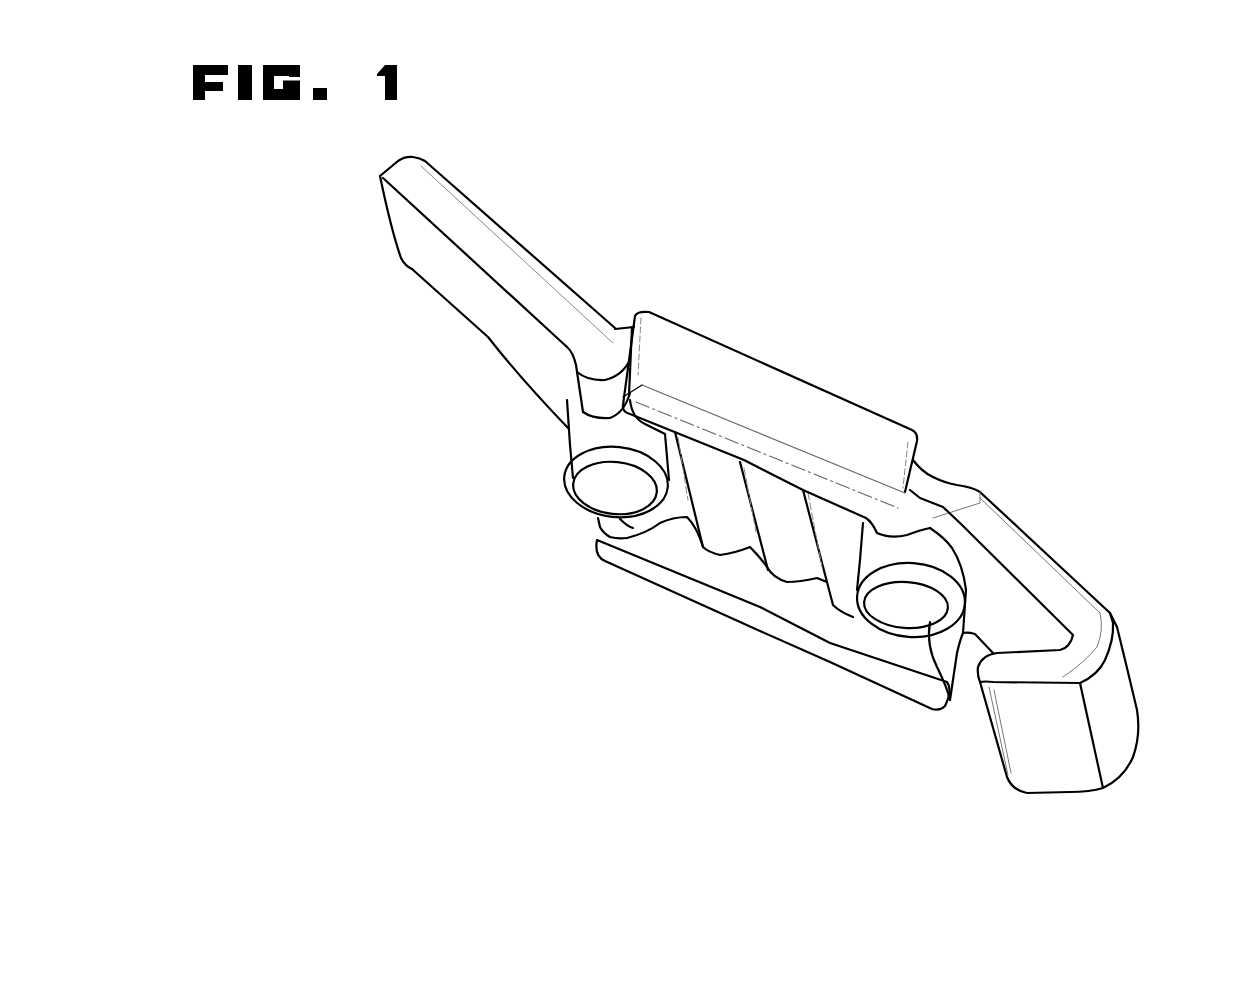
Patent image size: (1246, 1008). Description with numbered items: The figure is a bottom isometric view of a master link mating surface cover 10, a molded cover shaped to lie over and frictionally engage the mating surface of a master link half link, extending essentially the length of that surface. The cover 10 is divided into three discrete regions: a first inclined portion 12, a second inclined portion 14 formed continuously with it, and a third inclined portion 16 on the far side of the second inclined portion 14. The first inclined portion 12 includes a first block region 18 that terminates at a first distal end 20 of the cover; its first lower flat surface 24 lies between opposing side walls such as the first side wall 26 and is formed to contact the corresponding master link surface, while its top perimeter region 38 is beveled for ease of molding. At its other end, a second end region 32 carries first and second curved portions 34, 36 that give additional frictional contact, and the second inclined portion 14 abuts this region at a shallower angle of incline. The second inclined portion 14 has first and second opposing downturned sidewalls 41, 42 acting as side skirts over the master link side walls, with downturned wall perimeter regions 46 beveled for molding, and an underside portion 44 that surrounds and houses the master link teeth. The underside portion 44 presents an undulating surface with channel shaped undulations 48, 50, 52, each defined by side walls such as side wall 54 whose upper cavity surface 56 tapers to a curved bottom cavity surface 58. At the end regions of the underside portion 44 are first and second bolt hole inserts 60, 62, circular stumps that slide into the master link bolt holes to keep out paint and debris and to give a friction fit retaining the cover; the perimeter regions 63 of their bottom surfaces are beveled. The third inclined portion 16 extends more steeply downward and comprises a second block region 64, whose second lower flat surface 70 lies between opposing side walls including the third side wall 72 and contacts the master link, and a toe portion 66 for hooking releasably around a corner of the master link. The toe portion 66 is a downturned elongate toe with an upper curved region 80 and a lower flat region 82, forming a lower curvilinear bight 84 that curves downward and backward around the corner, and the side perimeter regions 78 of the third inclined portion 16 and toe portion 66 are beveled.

The master link mating surface cover 10 is at (958, 228).
The first inclined portion 12 is at (649, 301).
The second inclined portion 14 is at (933, 398).
The third inclined portion 16 is at (1186, 589).
The first block region 18 is at (380, 230).
The first distal end 20 is at (386, 203).
The first lower flat surface 24 is at (422, 256).
The first side wall 26 is at (405, 172).
The second end region 32 is at (575, 459).
The first curved portion 34 is at (610, 352).
The second curved portion 36 is at (630, 528).
The top perimeter region 38 is at (470, 203).
The first downturned sidewall 41 is at (675, 338).
The second downturned sidewall 42 is at (660, 557).
The underside portion 44 is at (855, 627).
The downturned wall perimeter regions 46 is at (722, 424).
The first channel shaped undulation 48 is at (671, 553).
The second channel shaped undulation 50 is at (711, 581).
The third channel shaped undulation 52 is at (756, 614).
The side wall 54 is at (718, 503).
The upper cavity surface 56 is at (755, 515).
The curved bottom cavity surface 58 is at (723, 535).
The first bolt hole insert 60 is at (593, 498).
The second bolt hole insert 62 is at (947, 715).
The perimeter regions 63 is at (577, 467).
The second block region 64 is at (1043, 532).
The toe portion 66 is at (1103, 798).
The second lower flat surface 70 is at (1000, 580).
The third side wall 72 is at (1050, 587).
The side perimeter regions 78 is at (1117, 622).
The upper curved region 80 is at (1120, 723).
The lower flat region 82 is at (1053, 787).
The lower curvilinear bight 84 is at (997, 753).